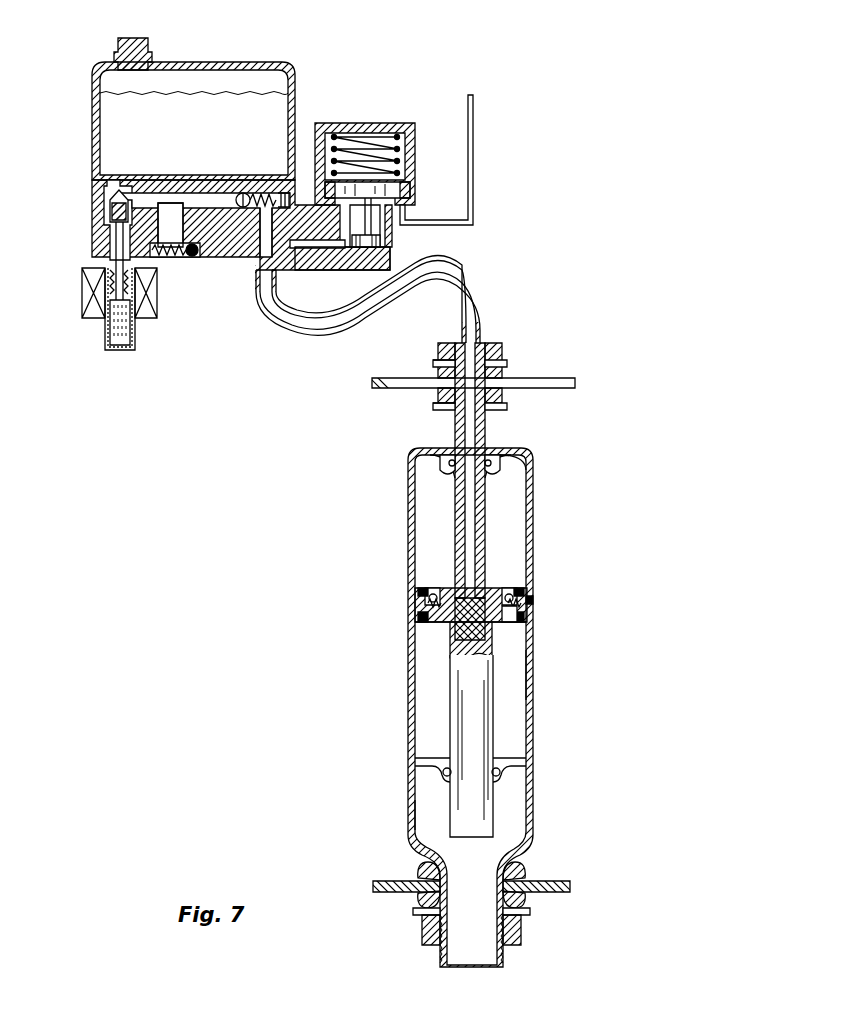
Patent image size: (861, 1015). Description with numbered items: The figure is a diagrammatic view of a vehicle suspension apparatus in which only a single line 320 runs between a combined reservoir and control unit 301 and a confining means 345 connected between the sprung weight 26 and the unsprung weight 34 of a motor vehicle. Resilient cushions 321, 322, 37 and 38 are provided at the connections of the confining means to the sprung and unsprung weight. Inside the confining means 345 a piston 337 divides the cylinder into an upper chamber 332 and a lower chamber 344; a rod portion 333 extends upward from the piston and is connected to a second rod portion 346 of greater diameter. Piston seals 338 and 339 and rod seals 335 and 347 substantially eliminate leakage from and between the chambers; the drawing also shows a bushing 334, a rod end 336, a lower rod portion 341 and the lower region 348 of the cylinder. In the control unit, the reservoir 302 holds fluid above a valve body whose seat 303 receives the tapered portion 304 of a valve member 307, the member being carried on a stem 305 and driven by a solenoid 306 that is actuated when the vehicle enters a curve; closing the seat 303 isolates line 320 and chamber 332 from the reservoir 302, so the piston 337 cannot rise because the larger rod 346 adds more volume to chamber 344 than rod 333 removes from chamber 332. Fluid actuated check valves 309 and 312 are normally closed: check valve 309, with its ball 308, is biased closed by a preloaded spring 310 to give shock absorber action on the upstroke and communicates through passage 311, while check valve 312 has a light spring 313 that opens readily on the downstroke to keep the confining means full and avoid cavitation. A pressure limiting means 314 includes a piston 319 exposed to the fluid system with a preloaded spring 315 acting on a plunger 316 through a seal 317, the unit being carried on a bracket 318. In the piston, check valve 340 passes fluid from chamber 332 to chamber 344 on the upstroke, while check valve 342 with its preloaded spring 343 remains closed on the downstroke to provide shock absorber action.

The combined reservoir and control unit 301 is at (235, 62).
The reservoir 302 is at (120, 72).
The seat 303 is at (92, 186).
The tapered portion 304 is at (108, 210).
The valve stem 305 is at (112, 262).
The solenoid 306 is at (82, 297).
The valve member 307 is at (122, 328).
The check ball 308 is at (194, 256).
The check valve 309 is at (175, 262).
The spring 310 is at (165, 262).
The outlet passage 311 is at (266, 255).
The check valve 312 is at (248, 193).
The light spring 313 is at (275, 198).
The pressure limiting means 314 is at (385, 123).
The coil spring 315 is at (390, 130).
The plunger 316 is at (395, 193).
The seal 317 is at (375, 240).
The bracket 318 is at (473, 210).
The piston 319 is at (392, 268).
The line 320 is at (440, 292).
The resilient cushion 321 is at (500, 372).
The sprung weight 26 is at (545, 382).
The resilient cushion 322 is at (440, 395).
The rod portion 333 is at (455, 440).
The bushing 334 is at (488, 458).
The rod seal 335 is at (522, 452).
The upper chamber 332 is at (418, 486).
The piston 337 is at (455, 588).
The rod end 336 is at (488, 574).
The preloaded spring 343 is at (533, 598).
The piston seal 338 is at (422, 590).
The check valve 340 is at (418, 606).
The check valve 342 is at (520, 598).
The piston seal 339 is at (430, 608).
The lower rod portion 341 is at (452, 620).
The lower chamber 344 is at (512, 648).
The confining means 345 is at (530, 670).
The second rod portion 346 is at (452, 686).
The rod seal 347 is at (505, 768).
The lower chamber 348 is at (430, 806).
The resilient cushion 37 is at (525, 868).
The unsprung weight 34 is at (570, 884).
The resilient cushion 38 is at (530, 900).